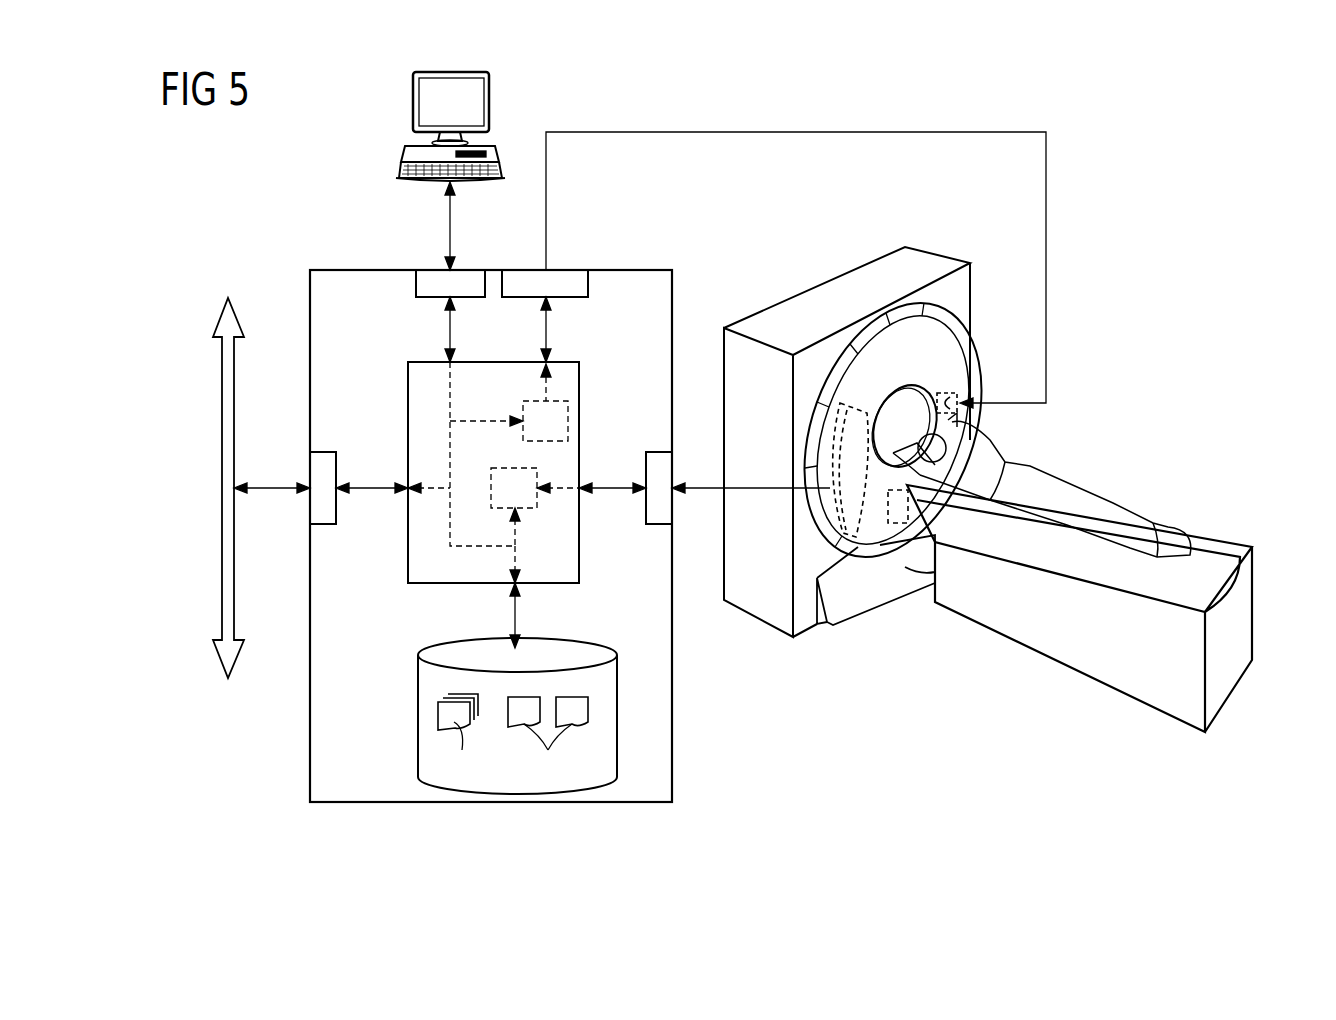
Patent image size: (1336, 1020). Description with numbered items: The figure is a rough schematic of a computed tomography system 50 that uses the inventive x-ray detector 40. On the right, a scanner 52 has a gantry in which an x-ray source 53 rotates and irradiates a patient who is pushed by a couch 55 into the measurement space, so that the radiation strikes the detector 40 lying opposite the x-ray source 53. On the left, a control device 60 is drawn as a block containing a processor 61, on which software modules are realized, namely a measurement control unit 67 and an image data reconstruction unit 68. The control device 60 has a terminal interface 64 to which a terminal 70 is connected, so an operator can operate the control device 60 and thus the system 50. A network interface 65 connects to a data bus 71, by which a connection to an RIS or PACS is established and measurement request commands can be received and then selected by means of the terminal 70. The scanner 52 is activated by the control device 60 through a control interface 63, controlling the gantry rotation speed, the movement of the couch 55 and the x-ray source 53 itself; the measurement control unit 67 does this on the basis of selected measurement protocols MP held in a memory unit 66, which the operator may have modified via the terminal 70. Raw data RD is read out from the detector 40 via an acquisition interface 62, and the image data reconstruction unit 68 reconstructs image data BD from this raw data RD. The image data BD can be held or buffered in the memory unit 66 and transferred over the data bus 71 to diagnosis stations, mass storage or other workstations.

The terminal 70 is at (489, 97).
The control device 60 is at (642, 270).
The terminal interface 64 is at (472, 282).
The control interface 63 is at (566, 282).
The processor 61 is at (491, 472).
The measurement control unit 67 is at (568, 421).
The image data reconstruction unit 68 is at (518, 510).
The network interface 65 is at (326, 516).
The acquisition interface 62 is at (657, 516).
The memory unit 66 is at (483, 688).
The data bus 71 is at (228, 448).
The computed tomography system 50 is at (988, 489).
The scanner 52 is at (978, 365).
The x-ray source 53 is at (950, 390).
The x-ray detector 40 is at (847, 507).
The couch 55 is at (1077, 655).
The raw data RD is at (710, 487).
The measurement protocols MP is at (461, 740).
The image data BD is at (548, 742).